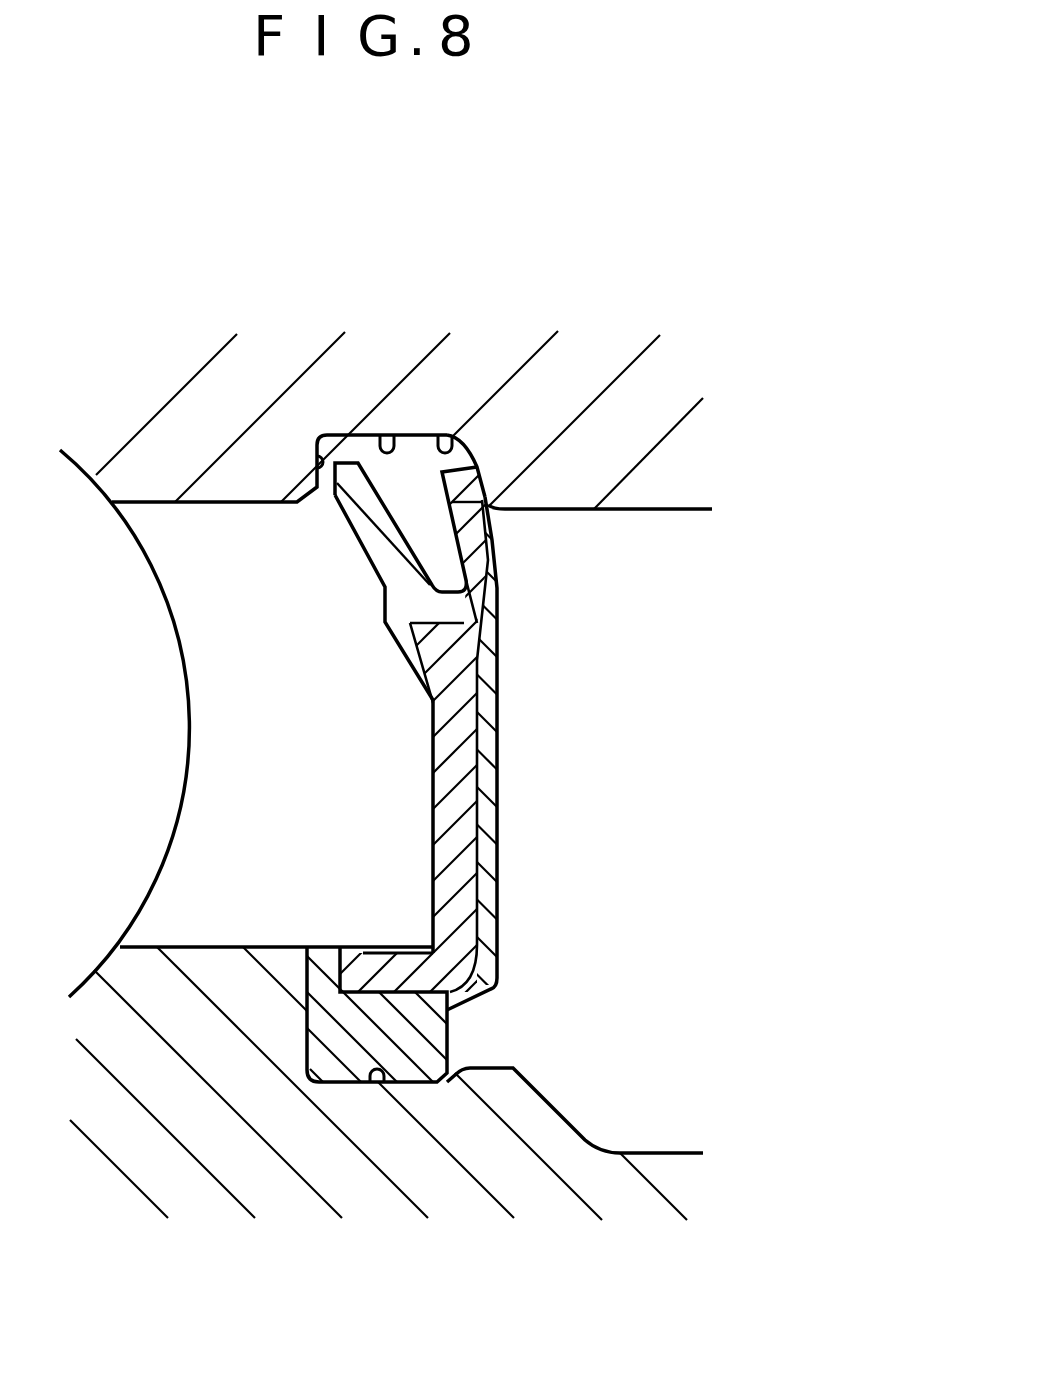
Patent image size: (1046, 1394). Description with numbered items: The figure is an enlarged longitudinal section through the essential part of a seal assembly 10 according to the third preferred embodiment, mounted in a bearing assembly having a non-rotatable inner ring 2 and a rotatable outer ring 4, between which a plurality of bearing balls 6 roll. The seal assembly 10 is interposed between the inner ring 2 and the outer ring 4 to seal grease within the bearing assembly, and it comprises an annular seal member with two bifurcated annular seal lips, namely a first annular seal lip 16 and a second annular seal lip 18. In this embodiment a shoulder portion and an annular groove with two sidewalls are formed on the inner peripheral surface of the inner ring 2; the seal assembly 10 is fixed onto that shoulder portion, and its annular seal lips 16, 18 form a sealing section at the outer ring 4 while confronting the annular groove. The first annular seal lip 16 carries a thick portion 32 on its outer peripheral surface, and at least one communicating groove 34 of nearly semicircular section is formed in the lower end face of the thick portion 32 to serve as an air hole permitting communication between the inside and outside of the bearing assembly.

The inner ring 2 is at (630, 1173).
The outer ring 4 is at (672, 483).
The bearing balls 6 is at (160, 802).
The seal assembly 10 is at (510, 785).
The first annular seal lip 16 is at (490, 562).
The second annular seal lip 18 is at (368, 538).
The thick portion 32 is at (485, 500).
The communicating groove 34 is at (477, 466).